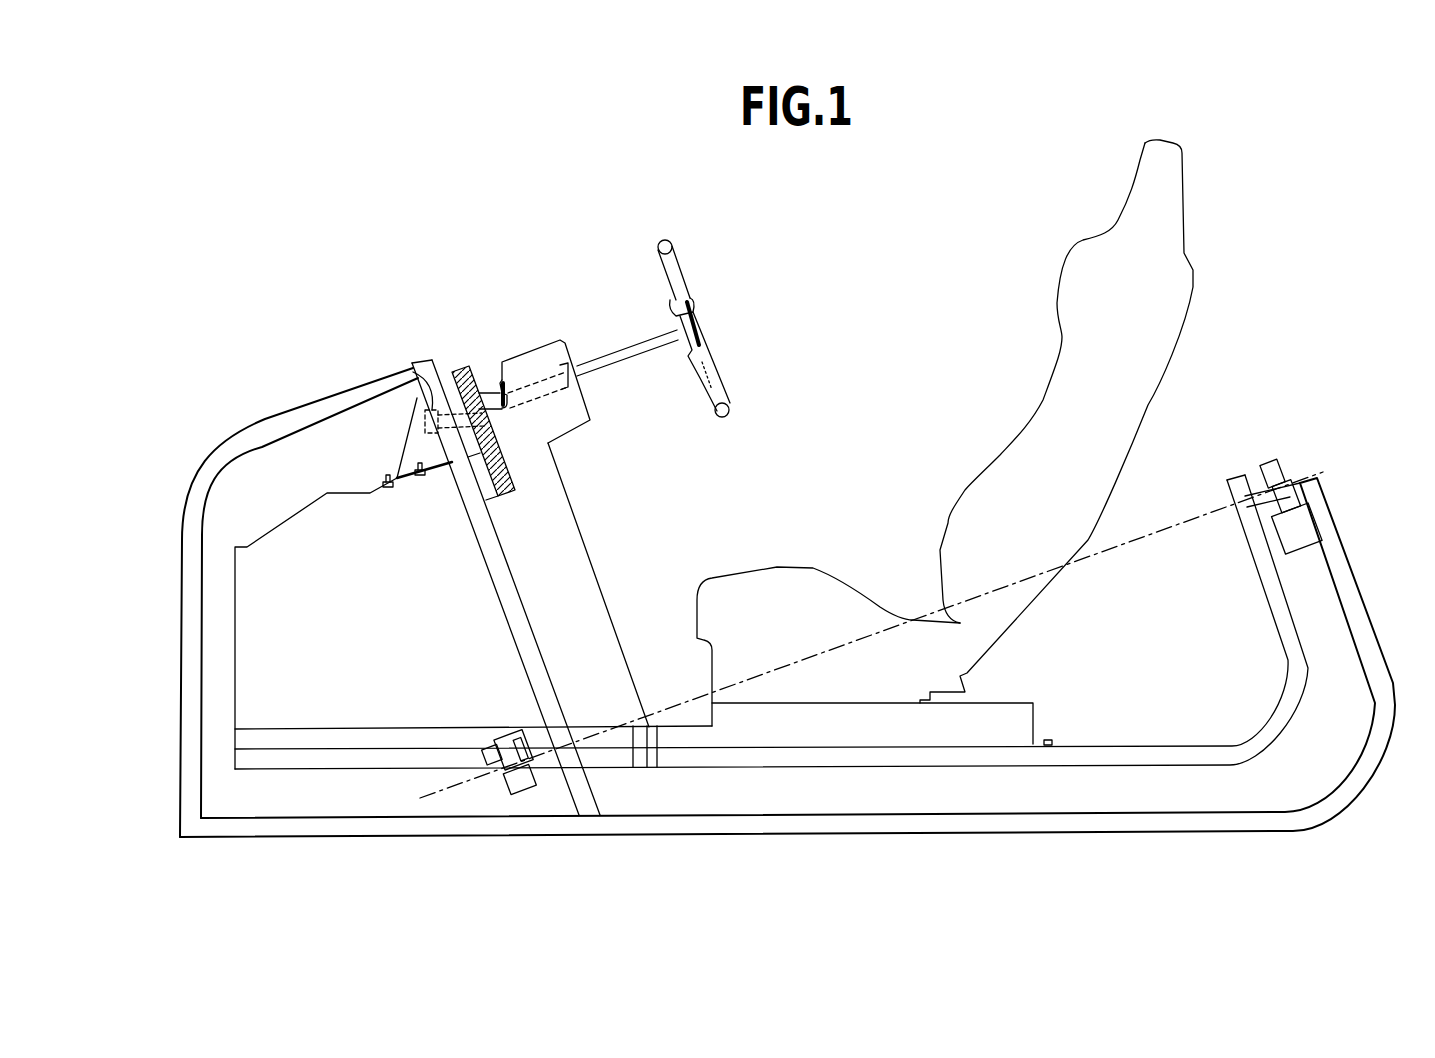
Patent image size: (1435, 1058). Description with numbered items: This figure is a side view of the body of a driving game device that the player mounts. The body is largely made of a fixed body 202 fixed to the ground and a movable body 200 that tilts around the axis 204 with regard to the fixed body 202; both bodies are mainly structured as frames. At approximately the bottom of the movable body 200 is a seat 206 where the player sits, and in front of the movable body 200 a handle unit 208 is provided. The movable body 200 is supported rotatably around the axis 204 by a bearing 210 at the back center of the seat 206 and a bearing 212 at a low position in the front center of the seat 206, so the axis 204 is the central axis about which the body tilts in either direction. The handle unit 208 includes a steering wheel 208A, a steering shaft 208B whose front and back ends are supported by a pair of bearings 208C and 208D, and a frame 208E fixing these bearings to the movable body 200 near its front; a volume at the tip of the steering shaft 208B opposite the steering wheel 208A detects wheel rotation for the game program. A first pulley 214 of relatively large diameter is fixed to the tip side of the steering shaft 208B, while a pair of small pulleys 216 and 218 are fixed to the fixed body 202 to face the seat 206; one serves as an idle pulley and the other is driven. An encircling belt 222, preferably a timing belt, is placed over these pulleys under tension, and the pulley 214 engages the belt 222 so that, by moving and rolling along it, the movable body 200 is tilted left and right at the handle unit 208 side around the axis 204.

The movable body 200 is at (598, 548).
The fixed body 202 is at (306, 396).
The axis 204 is at (1163, 518).
The seat 206 is at (807, 568).
The handle unit 208 is at (597, 336).
The steering wheel 208A is at (690, 268).
The steering shaft 208B is at (638, 358).
The bearing 208C is at (565, 340).
The bearing 208D is at (422, 405).
The frame 208E is at (503, 357).
The bearing 210 is at (1284, 452).
The bearing 212 is at (521, 800).
The first pulley 214 is at (430, 352).
The small pulley 216 is at (512, 478).
The small pulley 218 is at (645, 746).
The belt 222 is at (455, 365).